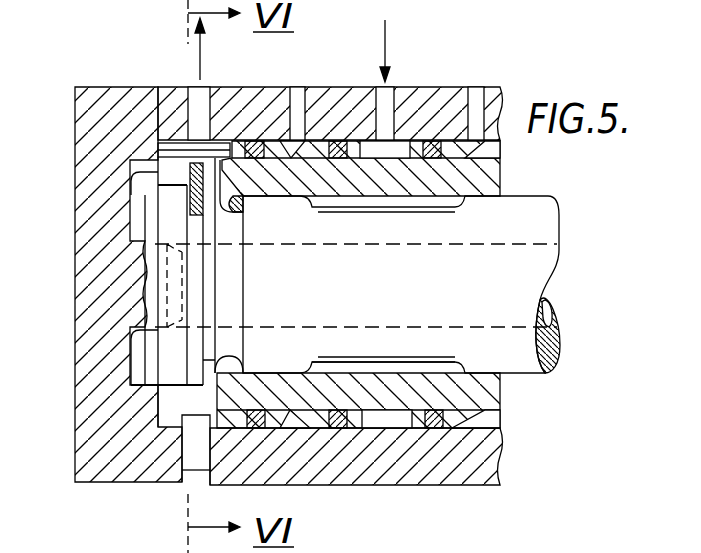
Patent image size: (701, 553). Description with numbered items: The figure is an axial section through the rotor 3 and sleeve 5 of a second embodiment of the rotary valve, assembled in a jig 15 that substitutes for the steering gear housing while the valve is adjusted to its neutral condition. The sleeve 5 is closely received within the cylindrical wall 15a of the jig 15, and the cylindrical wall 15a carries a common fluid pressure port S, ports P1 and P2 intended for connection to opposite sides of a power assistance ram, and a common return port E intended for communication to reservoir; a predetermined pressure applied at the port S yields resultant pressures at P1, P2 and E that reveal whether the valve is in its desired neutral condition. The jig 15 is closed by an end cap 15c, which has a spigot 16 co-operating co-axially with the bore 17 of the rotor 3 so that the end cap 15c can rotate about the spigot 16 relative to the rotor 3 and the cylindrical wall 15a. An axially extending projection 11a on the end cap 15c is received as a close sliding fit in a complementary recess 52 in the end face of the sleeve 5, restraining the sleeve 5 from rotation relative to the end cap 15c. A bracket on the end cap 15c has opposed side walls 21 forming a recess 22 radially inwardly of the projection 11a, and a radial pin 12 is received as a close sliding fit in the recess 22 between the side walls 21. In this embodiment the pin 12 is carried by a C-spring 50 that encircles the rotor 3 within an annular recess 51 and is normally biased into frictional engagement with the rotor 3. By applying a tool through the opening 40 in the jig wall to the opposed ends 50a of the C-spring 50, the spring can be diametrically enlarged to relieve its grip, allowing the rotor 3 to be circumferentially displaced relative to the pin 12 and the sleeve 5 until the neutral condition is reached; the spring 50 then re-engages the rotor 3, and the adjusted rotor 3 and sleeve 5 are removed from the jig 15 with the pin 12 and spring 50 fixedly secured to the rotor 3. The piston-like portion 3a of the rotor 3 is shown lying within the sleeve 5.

The rotor 3 is at (367, 262).
The piston 3a is at (420, 357).
The sleeve 5 is at (375, 234).
The projection 11a is at (200, 152).
The pin 12 is at (190, 163).
The jig 15 is at (278, 88).
The cylindrical wall 15a is at (485, 455).
The end cap 15c is at (110, 448).
The spigot 16 is at (140, 273).
The bore 17 is at (383, 246).
The side walls 21 is at (215, 205).
The recess 22 is at (160, 153).
The opening 40 is at (195, 458).
The C-spring 50 is at (188, 226).
The opposed ends 50a is at (200, 342).
The annular recess 51 is at (200, 302).
The recess 52 is at (243, 141).
The return port E is at (198, 62).
The fluid pressure port S is at (386, 44).
The port P1 is at (472, 97).
The port P2 is at (293, 97).